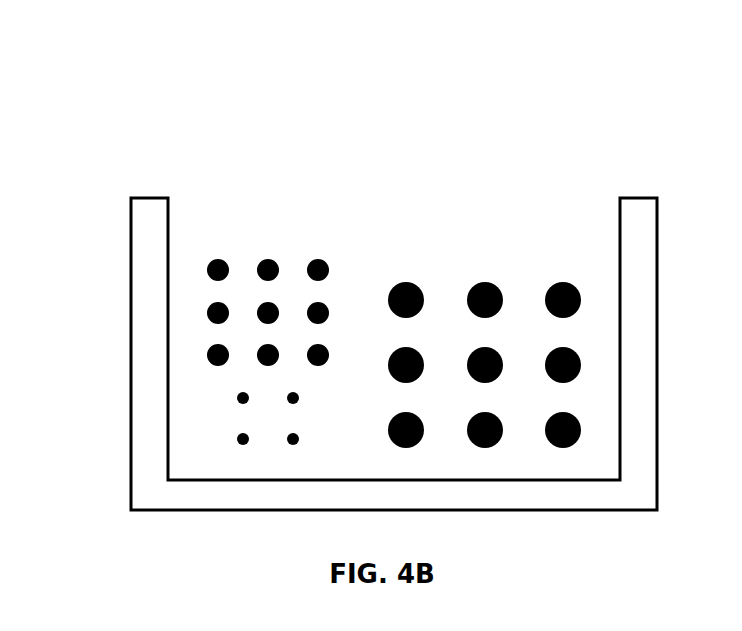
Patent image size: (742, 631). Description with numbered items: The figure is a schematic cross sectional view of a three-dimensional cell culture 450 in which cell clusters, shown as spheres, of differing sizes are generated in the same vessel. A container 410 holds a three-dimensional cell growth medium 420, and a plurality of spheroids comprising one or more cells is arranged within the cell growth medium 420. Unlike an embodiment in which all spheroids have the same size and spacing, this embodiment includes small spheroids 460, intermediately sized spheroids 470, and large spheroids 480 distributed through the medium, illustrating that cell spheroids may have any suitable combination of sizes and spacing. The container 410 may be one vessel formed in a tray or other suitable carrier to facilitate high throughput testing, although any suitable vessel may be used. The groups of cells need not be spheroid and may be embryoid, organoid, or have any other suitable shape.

The container 410 is at (659, 268).
The 3D cell growth medium 420 is at (503, 252).
The 3D cell culture 450 is at (375, 164).
The small spheroids 460 is at (238, 397).
The intermediately sized spheroids 470 is at (262, 268).
The large spheroids 480 is at (405, 283).